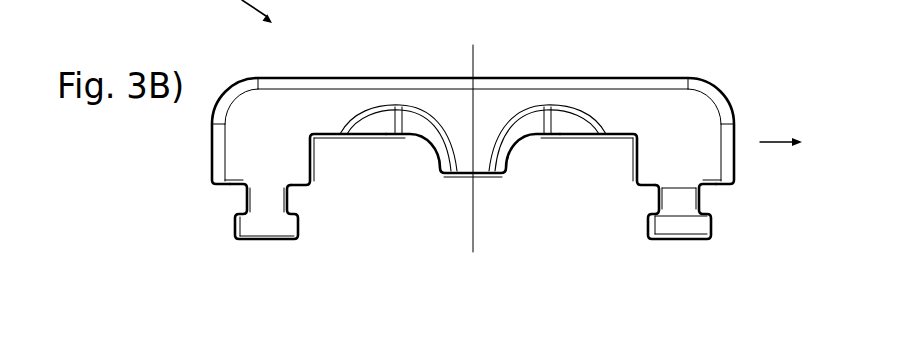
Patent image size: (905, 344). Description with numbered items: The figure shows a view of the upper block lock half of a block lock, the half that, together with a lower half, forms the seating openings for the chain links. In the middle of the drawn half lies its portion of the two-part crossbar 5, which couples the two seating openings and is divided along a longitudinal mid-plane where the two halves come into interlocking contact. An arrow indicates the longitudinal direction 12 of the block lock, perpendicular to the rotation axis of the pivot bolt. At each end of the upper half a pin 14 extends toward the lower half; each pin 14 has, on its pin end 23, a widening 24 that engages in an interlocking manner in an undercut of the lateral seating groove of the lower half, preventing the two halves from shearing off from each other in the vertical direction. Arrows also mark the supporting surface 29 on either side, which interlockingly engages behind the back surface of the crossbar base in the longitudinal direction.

The crossbar 5 is at (482, 176).
The longitudinal direction 12 is at (781, 128).
The pin 14 is at (277, 231).
The pin end 23 is at (253, 249).
The widening 24 is at (297, 223).
The supporting surface 29 is at (319, 157).